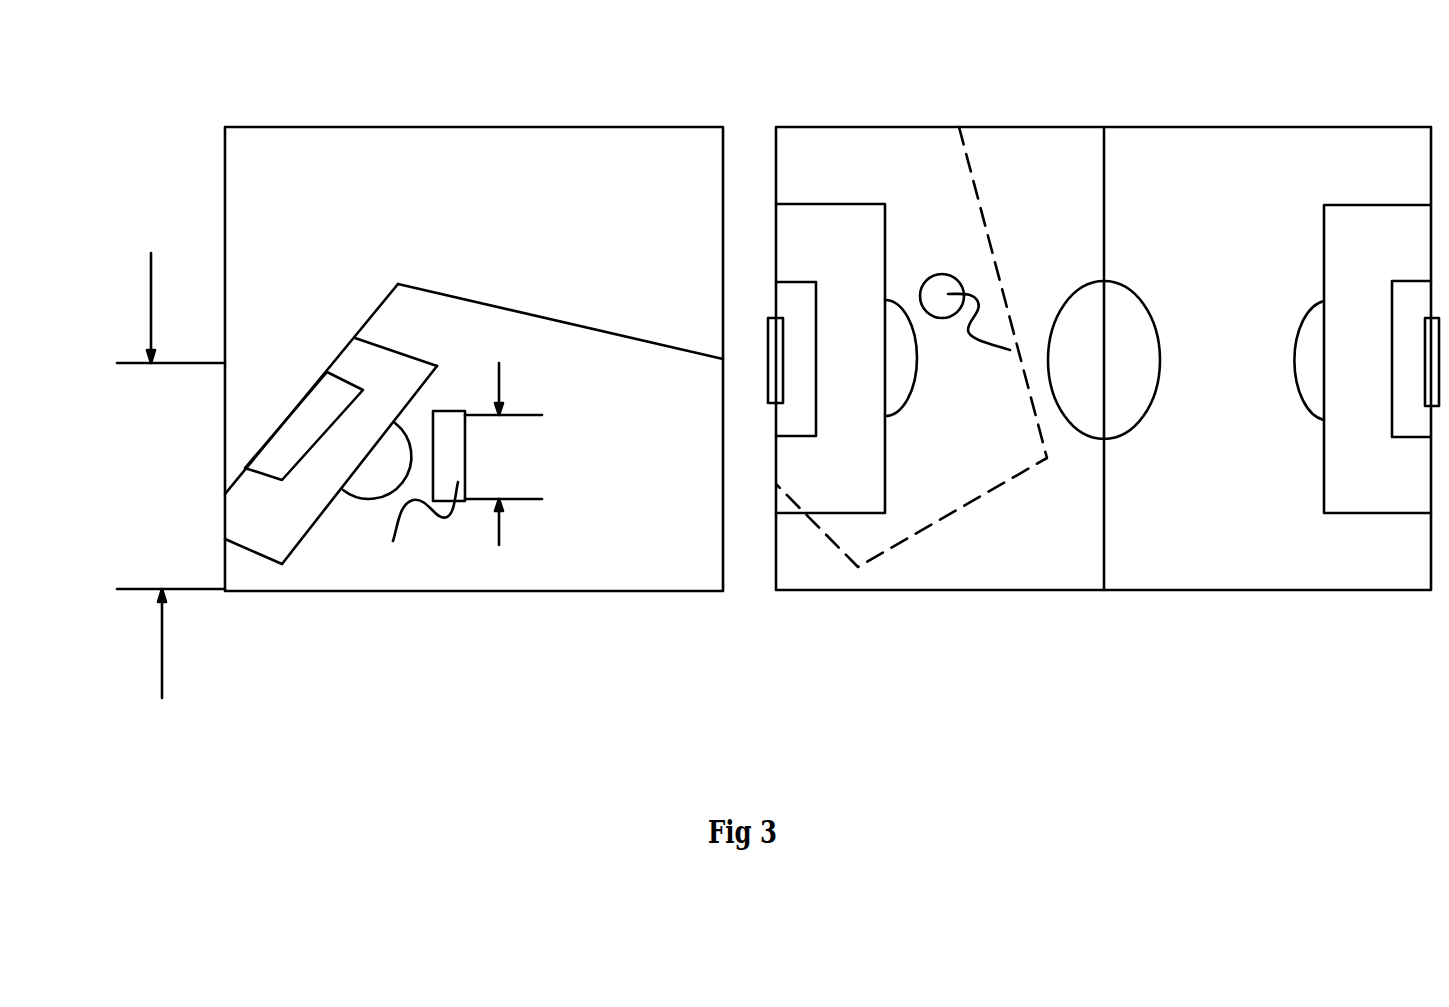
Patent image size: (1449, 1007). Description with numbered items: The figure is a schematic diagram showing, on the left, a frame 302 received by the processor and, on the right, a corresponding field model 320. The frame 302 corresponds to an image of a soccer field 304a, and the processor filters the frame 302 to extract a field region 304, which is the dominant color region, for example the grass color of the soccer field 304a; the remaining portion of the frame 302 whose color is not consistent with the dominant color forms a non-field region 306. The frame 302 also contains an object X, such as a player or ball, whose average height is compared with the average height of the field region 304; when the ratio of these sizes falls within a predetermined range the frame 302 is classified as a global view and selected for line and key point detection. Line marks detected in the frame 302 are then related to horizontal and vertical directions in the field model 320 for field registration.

The frame 302 is at (420, 391).
The field region 304 is at (547, 546).
The soccer field 304a is at (449, 456).
The non-field region 306 is at (598, 140).
The field model 320 is at (1139, 737).